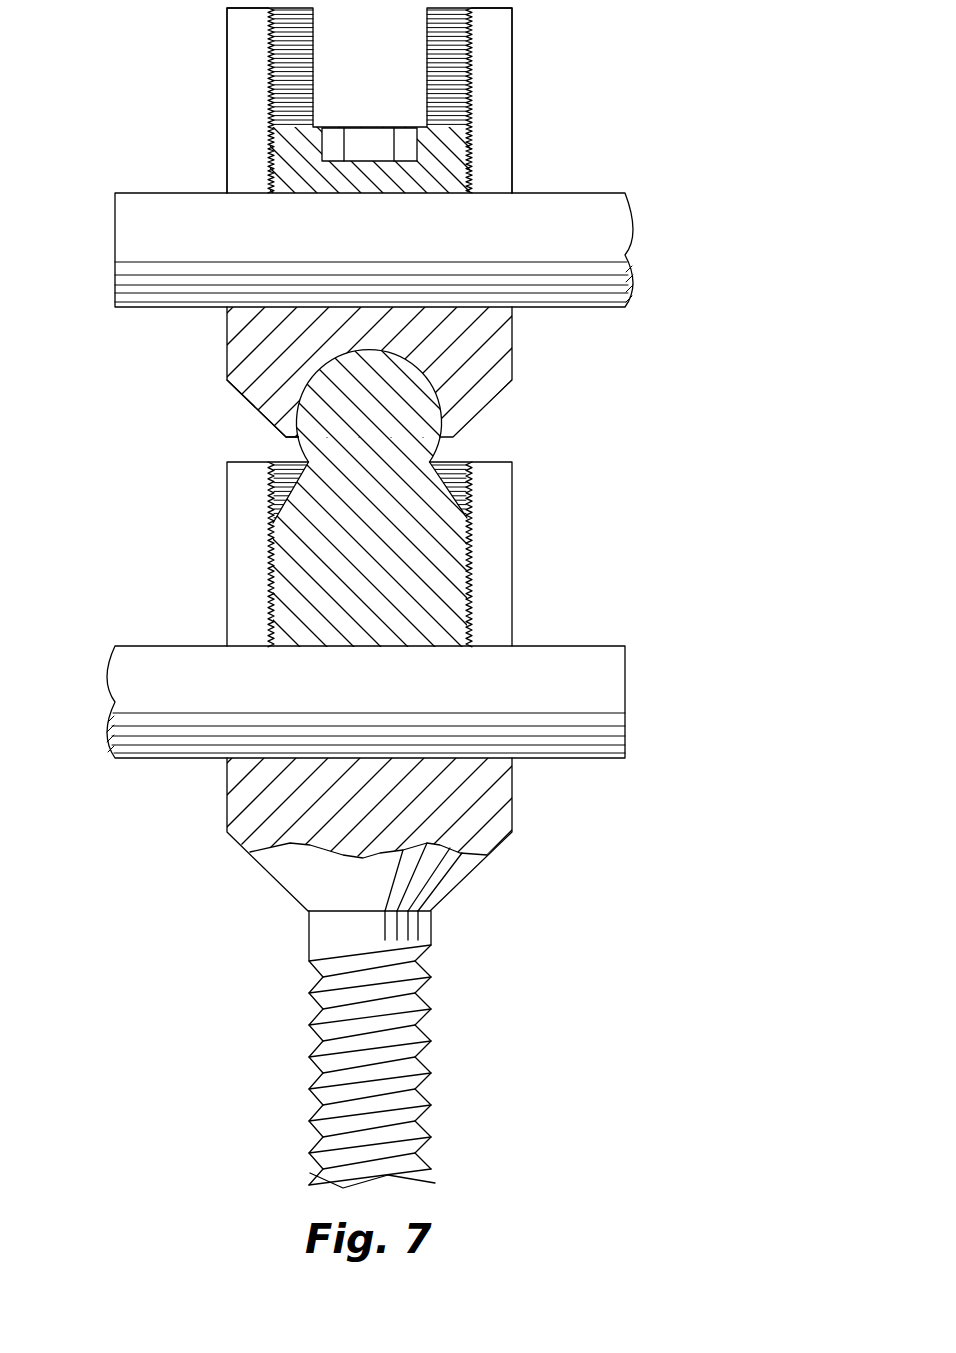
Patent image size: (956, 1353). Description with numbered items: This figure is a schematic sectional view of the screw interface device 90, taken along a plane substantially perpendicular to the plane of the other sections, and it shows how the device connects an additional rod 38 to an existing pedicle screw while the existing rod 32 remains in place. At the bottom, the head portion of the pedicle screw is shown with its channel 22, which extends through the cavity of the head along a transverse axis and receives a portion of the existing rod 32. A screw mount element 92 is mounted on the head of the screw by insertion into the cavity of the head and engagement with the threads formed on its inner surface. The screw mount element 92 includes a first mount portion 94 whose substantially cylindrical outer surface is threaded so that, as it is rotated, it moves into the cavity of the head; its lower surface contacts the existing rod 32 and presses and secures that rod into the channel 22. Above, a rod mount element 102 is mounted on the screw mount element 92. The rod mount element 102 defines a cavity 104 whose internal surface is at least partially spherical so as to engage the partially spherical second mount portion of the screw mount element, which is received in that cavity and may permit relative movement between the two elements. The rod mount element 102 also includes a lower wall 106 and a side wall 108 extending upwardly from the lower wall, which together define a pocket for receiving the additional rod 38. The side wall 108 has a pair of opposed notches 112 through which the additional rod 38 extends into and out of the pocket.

The screw interface device 90 is at (366, 327).
The side wall 108 is at (493, 40).
The opposed notches 112 is at (248, 110).
The additional rod 38 is at (155, 242).
The rod mount element 102 is at (478, 351).
The lower wall 106 is at (270, 345).
The cavity 104 is at (440, 405).
The screw mount element 92 is at (366, 498).
The first mount portion 94 is at (452, 605).
The channel 22 is at (250, 558).
The existing rod 32 is at (597, 698).